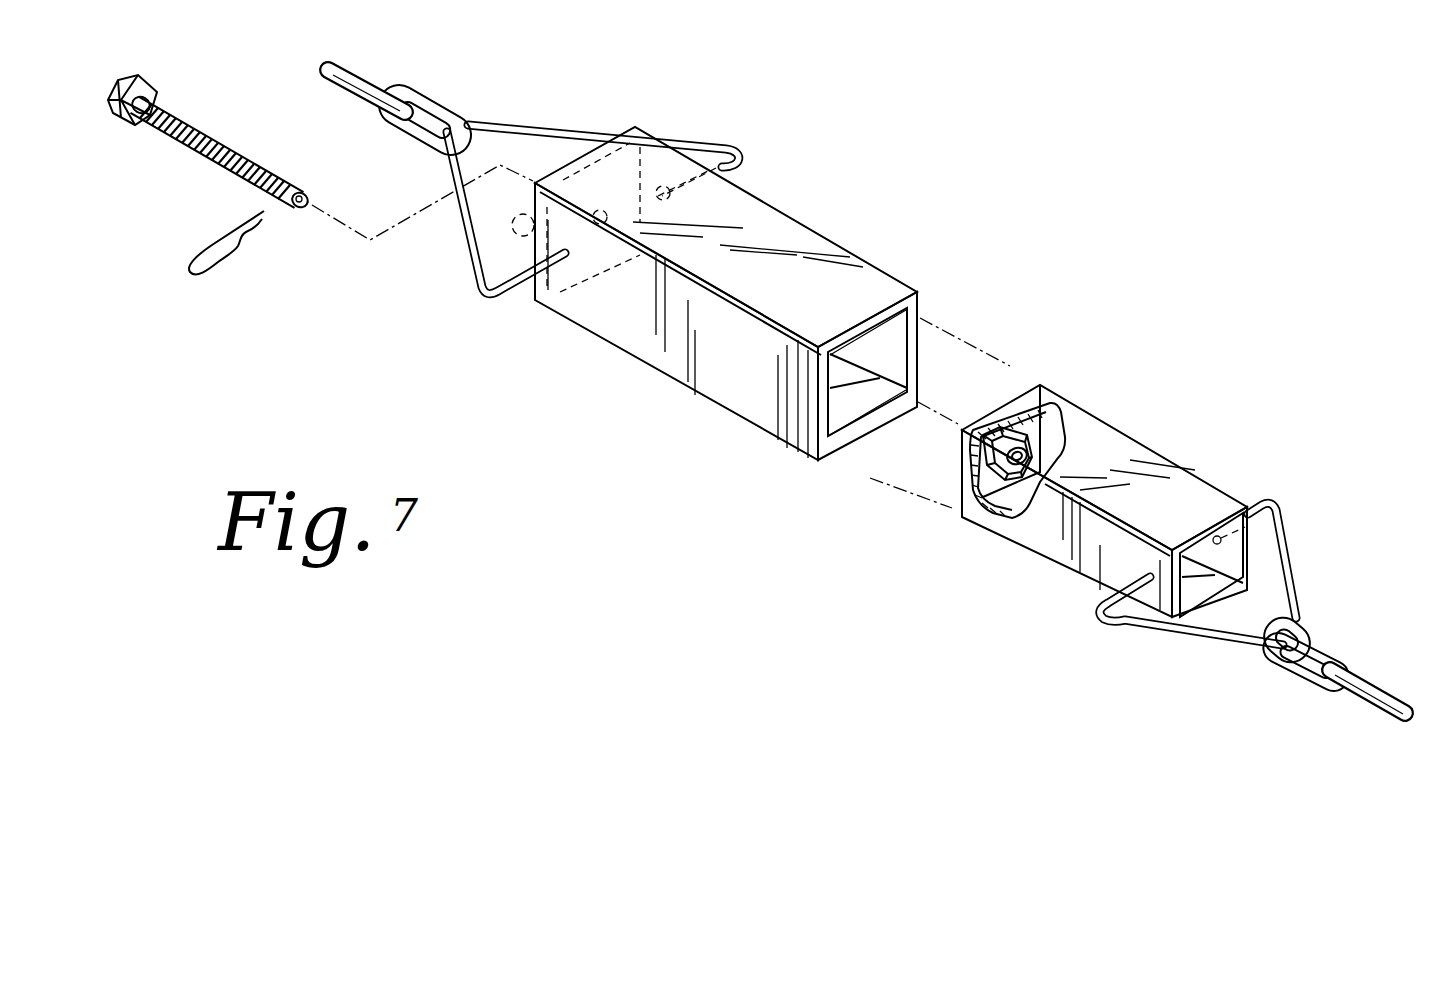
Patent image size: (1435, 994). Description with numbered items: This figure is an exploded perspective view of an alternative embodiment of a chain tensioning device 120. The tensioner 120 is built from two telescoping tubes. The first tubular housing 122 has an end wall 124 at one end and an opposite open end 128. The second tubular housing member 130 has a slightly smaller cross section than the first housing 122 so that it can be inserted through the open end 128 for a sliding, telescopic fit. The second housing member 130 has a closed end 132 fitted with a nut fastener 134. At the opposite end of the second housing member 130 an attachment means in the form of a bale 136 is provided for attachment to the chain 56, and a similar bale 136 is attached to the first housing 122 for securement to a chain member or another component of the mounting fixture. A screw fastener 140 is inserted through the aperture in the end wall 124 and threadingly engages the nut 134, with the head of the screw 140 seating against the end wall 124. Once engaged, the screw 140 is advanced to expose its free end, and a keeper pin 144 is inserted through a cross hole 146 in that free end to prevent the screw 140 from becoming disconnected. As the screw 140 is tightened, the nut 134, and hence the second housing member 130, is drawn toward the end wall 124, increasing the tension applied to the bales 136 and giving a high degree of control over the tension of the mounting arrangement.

The chain tensioning device 120 is at (868, 202).
The first tubular housing 122 is at (641, 343).
The end wall 124 is at (524, 228).
The open end 128 is at (851, 412).
The second tubular housing member 130 is at (1127, 448).
The closed end 132 is at (1017, 398).
The nut fastener 134 is at (1047, 418).
The bale 136 is at (478, 275).
The screw fastener 140 is at (183, 116).
The keeper pin 144 is at (218, 241).
The cross hole 146 is at (282, 204).
The chain 56 is at (1323, 637).